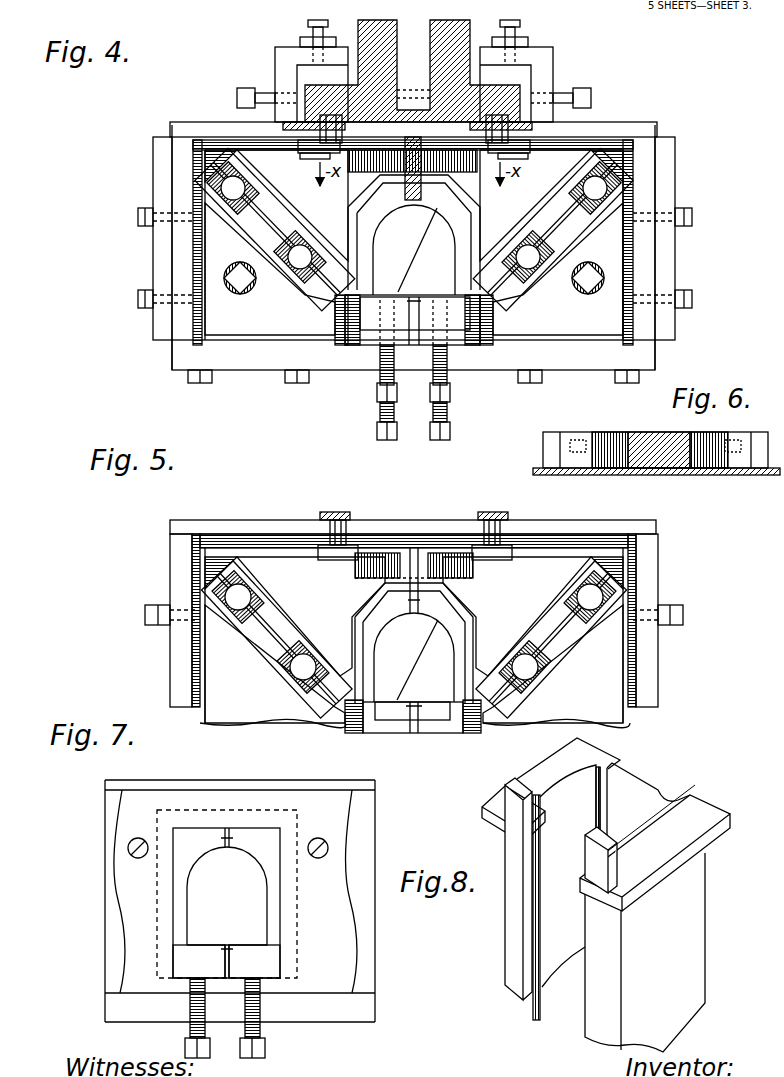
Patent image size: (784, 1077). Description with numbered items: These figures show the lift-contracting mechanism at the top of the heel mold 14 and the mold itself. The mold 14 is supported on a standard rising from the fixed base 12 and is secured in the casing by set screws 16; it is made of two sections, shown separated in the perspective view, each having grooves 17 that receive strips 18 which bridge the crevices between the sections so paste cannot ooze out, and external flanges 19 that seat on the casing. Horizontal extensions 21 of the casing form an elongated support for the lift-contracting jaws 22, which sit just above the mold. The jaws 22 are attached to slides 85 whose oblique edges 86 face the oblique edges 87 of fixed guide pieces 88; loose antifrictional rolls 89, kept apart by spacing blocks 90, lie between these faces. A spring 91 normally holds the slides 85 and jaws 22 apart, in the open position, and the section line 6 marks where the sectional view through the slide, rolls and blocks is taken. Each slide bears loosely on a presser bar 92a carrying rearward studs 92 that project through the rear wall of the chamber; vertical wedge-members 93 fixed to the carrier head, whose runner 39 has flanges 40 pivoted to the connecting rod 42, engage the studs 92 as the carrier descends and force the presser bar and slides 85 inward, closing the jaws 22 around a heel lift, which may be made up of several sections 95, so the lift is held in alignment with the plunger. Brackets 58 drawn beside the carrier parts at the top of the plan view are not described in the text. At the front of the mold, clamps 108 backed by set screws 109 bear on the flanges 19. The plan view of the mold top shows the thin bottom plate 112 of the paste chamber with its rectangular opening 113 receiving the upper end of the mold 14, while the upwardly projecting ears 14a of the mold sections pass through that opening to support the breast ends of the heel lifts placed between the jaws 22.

In FIG. 4, the section line 6 is at (633, 140).
In FIG. 6, the fixed base 12 is at (652, 475).
In FIG. 7, the heel mold 14 is at (227, 896).
In FIG. 8, the heel mold 14 is at (611, 895).
In FIG. 4, the upwardly projecting ears 14a is at (430, 320).
In FIG. 5, the upwardly projecting ears 14a is at (392, 714).
In FIG. 7, the upwardly projecting ears 14a is at (303, 937).
In FIG. 8, the upwardly projecting ears 14a is at (512, 802).
In FIG. 4, the set screws 16 is at (437, 441).
In FIG. 8, the grooves 17 is at (541, 795).
In FIG. 7, the strips 18 is at (231, 840).
In FIG. 8, the external flanges 19 is at (500, 828).
In FIG. 5, the horizontal extensions 21 is at (197, 723).
In FIG. 4, the lift-contracting jaws 22 is at (453, 210).
In FIG. 5, the lift-contracting jaws 22 is at (372, 623).
In FIG. 4, the runner 39 is at (457, 65).
In FIG. 4, the flanges 40 is at (310, 22).
In FIG. 4, the connecting rod 42 is at (530, 47).
In FIG. 4, the brackets 58 is at (300, 72).
In FIG. 4, the slides 85 is at (414, 205).
In FIG. 6, the slides 85 is at (578, 440).
In FIG. 5, the slides 85 is at (414, 616).
In FIG. 4, the oblique edges 86 is at (270, 203).
In FIG. 5, the oblique edges 86 is at (258, 624).
In FIG. 4, the oblique edges 87 is at (252, 238).
In FIG. 4, the fixed guide pieces 88 is at (419, 294).
In FIG. 4, the antifrictional rolls 89 is at (233, 186).
In FIG. 6, the antifrictional rolls 89 is at (612, 432).
In FIG. 5, the antifrictional rolls 89 is at (236, 596).
In FIG. 4, the spacing blocks 90 is at (278, 237).
In FIG. 6, the spacing blocks 90 is at (652, 432).
In FIG. 5, the spacing blocks 90 is at (258, 632).
In FIG. 4, the spring 91 is at (452, 172).
In FIG. 4, the studs 92 is at (283, 126).
In FIG. 5, the studs 92 is at (330, 523).
In FIG. 4, the presser bar 92a is at (505, 150).
In FIG. 5, the presser bar 92a is at (438, 550).
In FIG. 5, the wedge-members 93 is at (340, 518).
In FIG. 4, the sections 95 is at (414, 250).
In FIG. 5, the sections 95 is at (414, 657).
In FIG. 4, the clamps 108 is at (360, 330).
In FIG. 4, the set screws 109 is at (378, 372).
In FIG. 7, the set screws 109 is at (206, 1032).
In FIG. 7, the bottom plate 112 is at (337, 962).
In FIG. 7, the rectangular opening 113 is at (281, 895).